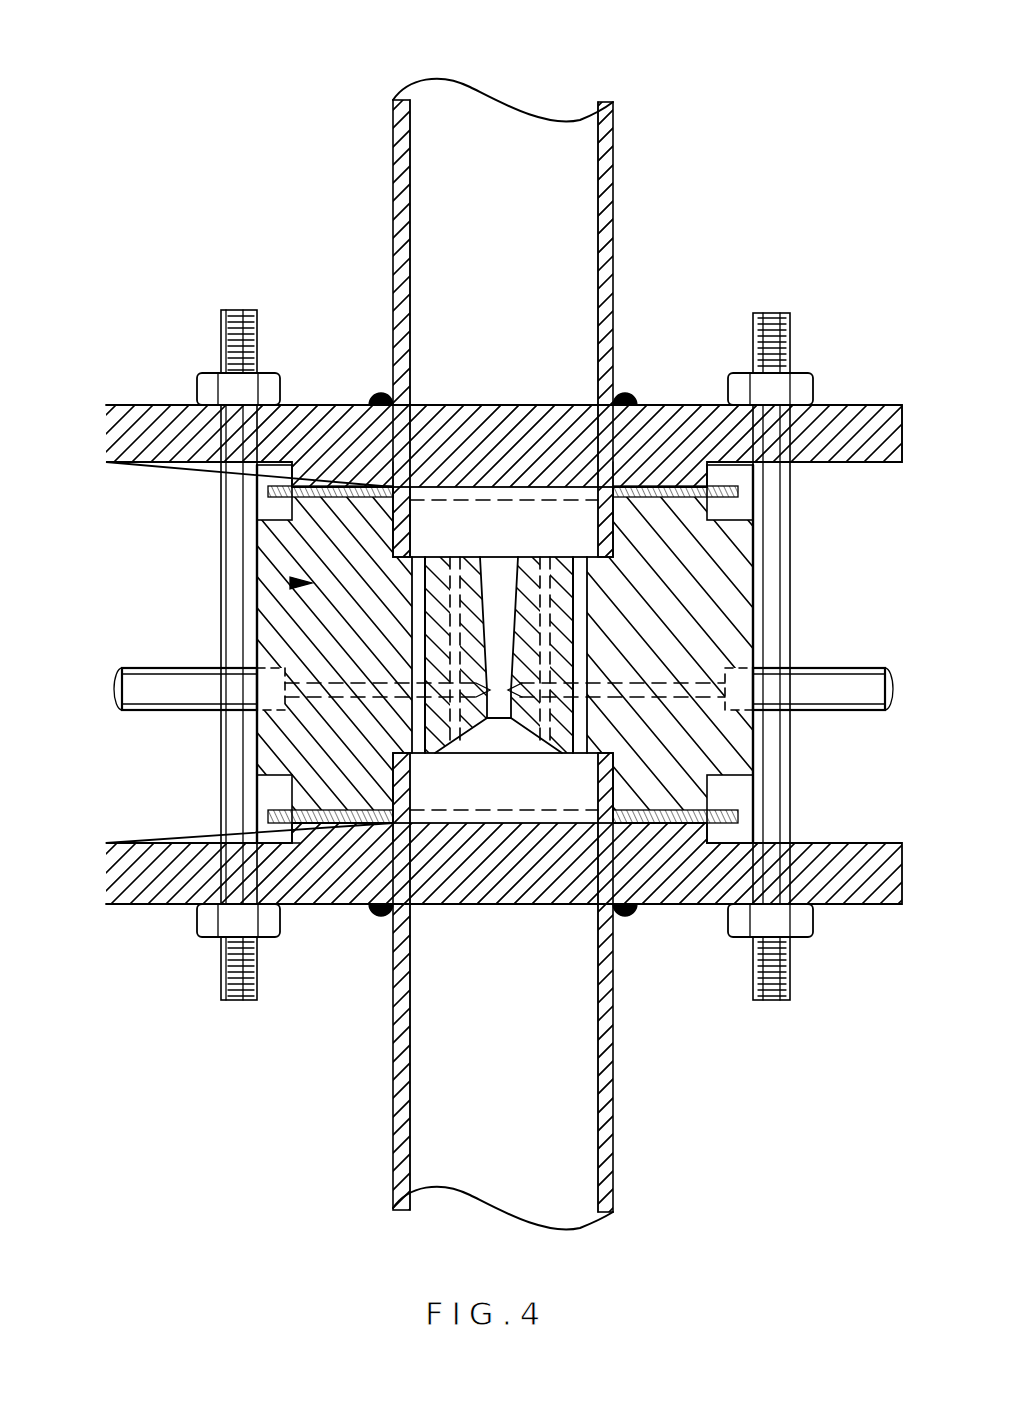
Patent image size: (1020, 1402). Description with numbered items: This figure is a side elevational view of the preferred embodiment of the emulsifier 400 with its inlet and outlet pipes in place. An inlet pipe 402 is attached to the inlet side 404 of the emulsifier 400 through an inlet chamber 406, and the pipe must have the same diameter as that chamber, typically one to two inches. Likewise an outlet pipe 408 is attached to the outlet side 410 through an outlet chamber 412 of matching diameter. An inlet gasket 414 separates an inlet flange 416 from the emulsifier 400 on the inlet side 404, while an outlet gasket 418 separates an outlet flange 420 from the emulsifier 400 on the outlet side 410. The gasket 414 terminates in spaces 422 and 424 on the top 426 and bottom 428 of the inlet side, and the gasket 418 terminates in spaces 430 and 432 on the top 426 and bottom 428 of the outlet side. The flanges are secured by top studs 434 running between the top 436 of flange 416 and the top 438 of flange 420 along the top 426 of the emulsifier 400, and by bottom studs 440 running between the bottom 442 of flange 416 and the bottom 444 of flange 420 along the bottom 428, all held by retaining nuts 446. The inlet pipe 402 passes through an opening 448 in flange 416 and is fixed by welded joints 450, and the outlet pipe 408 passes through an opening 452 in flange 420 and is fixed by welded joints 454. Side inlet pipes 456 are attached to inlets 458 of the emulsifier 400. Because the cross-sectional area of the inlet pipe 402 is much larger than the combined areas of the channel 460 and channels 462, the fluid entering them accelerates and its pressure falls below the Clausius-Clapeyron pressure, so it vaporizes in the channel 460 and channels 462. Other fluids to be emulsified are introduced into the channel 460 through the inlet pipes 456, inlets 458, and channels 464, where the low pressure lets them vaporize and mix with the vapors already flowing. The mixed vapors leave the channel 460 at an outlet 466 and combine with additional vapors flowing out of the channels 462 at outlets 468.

The emulsifier 400 is at (290, 583).
The inlet pipe 402 is at (472, 1043).
The inlet side 404 is at (483, 812).
The inlet chamber 406 is at (505, 787).
The outlet pipe 408 is at (478, 208).
The outlet side 410 is at (485, 497).
The outlet chamber 412 is at (560, 510).
The inlet gasket 414 is at (375, 812).
The inlet flange 416 is at (450, 880).
The outlet gasket 418 is at (350, 493).
The outlet flange 420 is at (385, 480).
The space 422 is at (273, 832).
The space 424 is at (743, 785).
The top of emulsifier 426 is at (250, 667).
The bottom of emulsifier 428 is at (757, 578).
The space 430 is at (275, 513).
The space 432 is at (735, 478).
The top studs 434 is at (233, 768).
The top of inlet flange 436 is at (197, 887).
The top of outlet flange 438 is at (178, 430).
The bottom studs 440 is at (768, 513).
The bottom of inlet flange 442 is at (845, 905).
The bottom of outlet flange 444 is at (842, 405).
The retaining nuts 446 is at (240, 388).
The opening 448 is at (470, 904).
The welded joints 450 is at (383, 930).
The opening 452 is at (485, 450).
The welded joints 454 is at (383, 392).
The inlet pipes 456 is at (195, 682).
The inlets 458 is at (270, 683).
The channel 460 is at (502, 653).
The channels 462 is at (455, 612).
The channels 464 is at (455, 688).
The outlet 466 is at (540, 495).
The outlets 468 is at (400, 470).